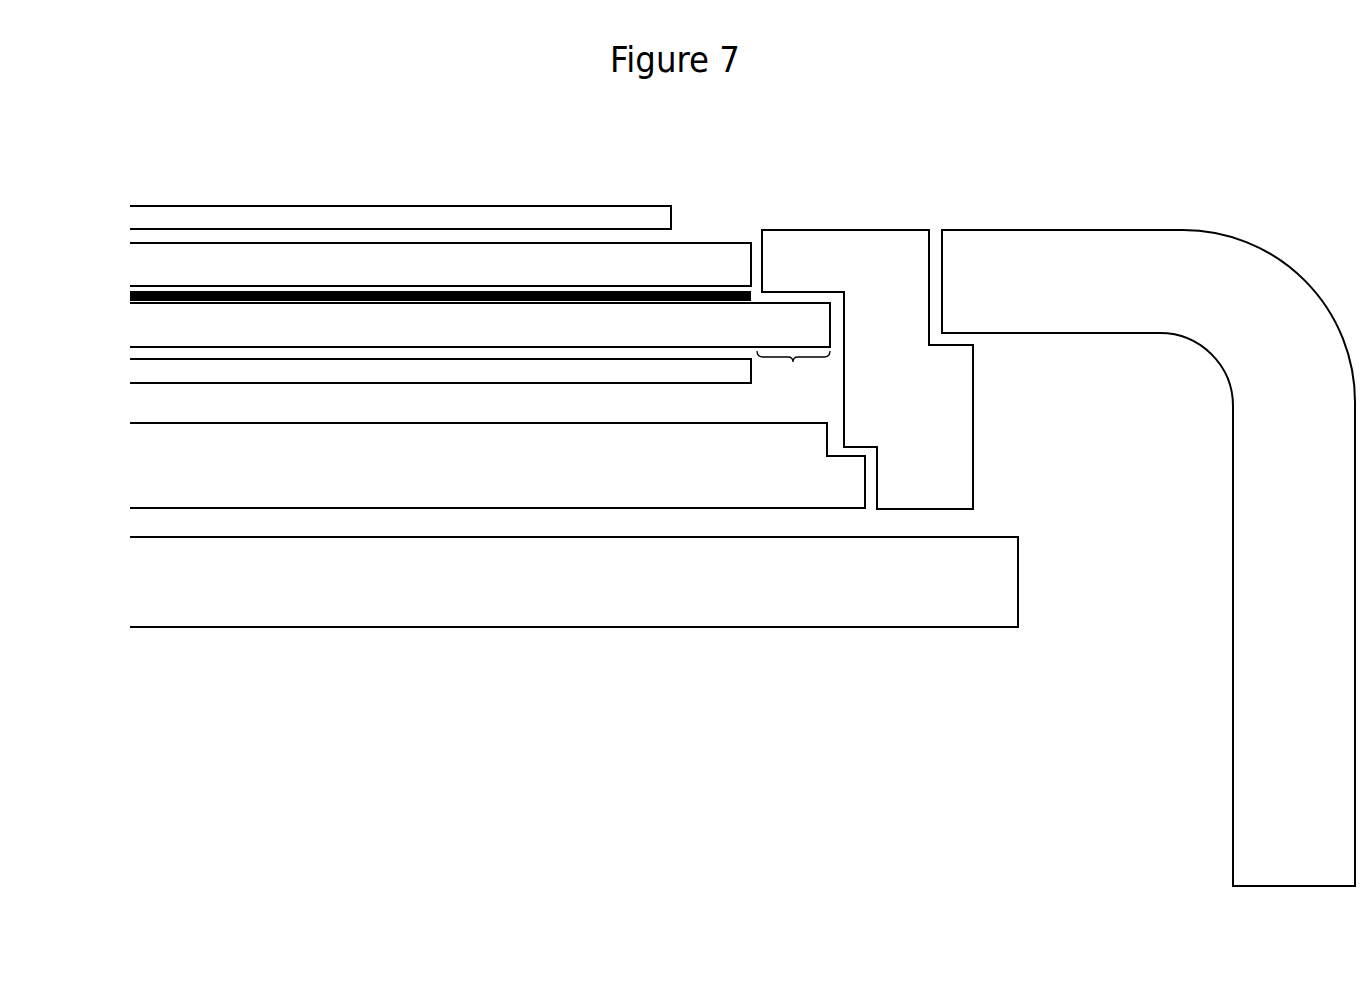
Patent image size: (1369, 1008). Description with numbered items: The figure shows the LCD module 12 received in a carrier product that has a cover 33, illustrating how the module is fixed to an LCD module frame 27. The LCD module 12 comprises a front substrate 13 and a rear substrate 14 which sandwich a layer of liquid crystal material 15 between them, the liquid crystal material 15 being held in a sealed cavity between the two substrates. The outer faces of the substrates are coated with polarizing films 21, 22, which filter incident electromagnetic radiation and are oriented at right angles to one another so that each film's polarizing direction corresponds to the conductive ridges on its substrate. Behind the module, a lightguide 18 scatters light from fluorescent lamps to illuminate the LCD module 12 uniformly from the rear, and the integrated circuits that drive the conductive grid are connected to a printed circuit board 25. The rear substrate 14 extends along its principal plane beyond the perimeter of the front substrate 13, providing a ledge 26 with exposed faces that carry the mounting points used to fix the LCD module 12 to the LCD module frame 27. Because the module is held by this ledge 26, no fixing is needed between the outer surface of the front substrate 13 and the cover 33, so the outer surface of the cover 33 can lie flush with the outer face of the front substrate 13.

The LCD module 12 is at (292, 133).
The polarizing film 21 is at (400, 218).
The front substrate 13 is at (440, 264).
The layer of liquid crystal material 15 is at (112, 295).
The rear substrate 14 is at (480, 325).
The polarizing film 22 is at (440, 371).
The ledge 26 is at (793, 370).
The lightguide 18 is at (497, 465).
The printed circuit board 25 is at (574, 582).
The LCD module frame 27 is at (867, 369).
The cover 33 is at (1148, 558).